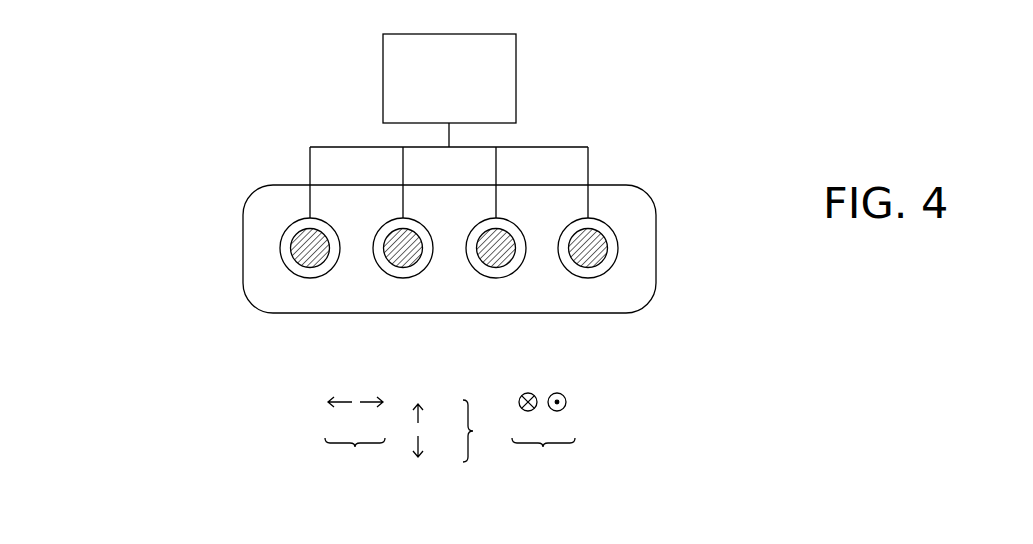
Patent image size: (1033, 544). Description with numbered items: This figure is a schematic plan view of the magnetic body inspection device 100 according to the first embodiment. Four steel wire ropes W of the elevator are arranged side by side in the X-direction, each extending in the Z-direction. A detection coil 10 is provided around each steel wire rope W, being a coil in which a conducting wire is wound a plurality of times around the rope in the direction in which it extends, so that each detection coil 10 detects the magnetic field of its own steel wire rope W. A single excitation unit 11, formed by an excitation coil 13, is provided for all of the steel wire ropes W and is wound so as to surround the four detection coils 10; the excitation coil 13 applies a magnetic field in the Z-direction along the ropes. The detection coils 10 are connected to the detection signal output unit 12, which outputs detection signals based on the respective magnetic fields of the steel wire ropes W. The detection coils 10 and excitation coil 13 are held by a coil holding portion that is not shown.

The magnetic body inspection device 100 is at (205, 140).
The detection signal output unit 12 is at (383, 73).
The excitation unit 11 is at (405, 249).
The excitation coil 13 is at (243, 250).
The detection coil 10 is at (278, 248).
The steel wire rope W is at (330, 262).